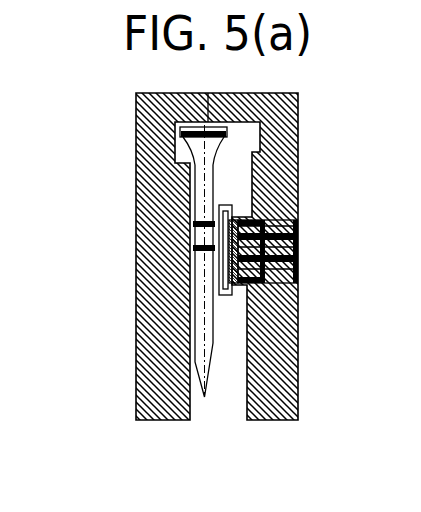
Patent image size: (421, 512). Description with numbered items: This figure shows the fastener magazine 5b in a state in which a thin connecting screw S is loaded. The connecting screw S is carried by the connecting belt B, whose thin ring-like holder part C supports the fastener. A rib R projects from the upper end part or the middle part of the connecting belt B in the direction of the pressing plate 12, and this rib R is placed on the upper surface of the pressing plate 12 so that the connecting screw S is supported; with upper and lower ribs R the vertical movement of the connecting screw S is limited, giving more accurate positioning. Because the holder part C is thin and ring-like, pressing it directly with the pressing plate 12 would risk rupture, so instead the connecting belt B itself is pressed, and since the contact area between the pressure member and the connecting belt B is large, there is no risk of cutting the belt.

The fastener magazine 5b is at (130, 152).
The connecting screw S is at (230, 157).
The holder part C is at (192, 247).
The rib R is at (236, 205).
The pressing plate 12 is at (298, 226).
The connecting belt B is at (222, 300).